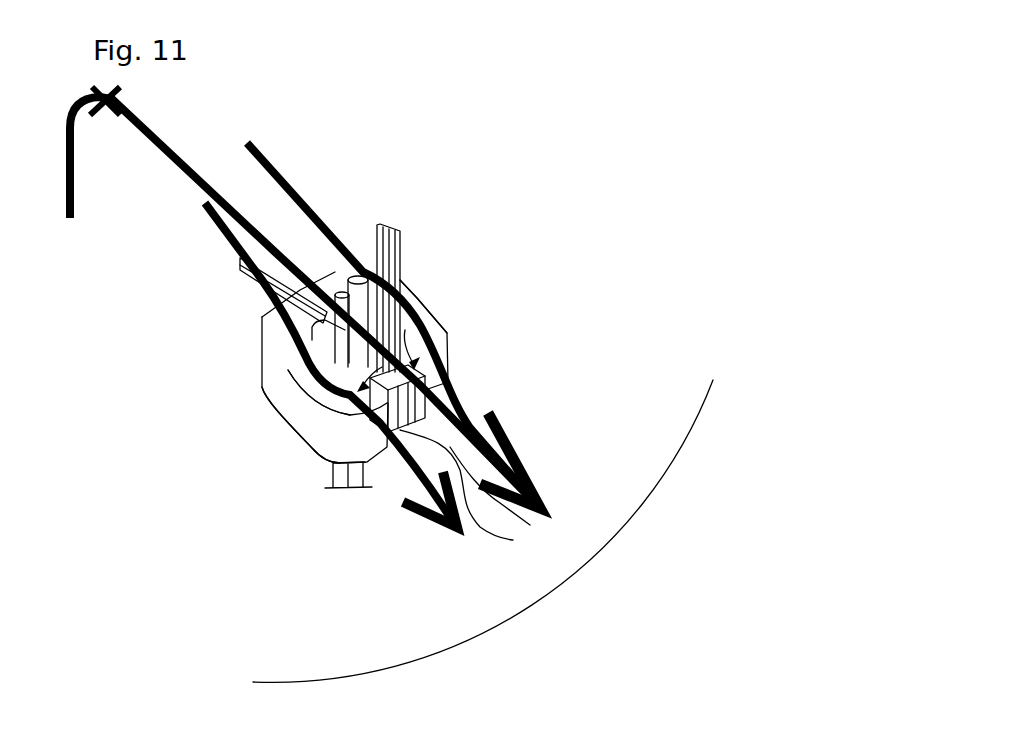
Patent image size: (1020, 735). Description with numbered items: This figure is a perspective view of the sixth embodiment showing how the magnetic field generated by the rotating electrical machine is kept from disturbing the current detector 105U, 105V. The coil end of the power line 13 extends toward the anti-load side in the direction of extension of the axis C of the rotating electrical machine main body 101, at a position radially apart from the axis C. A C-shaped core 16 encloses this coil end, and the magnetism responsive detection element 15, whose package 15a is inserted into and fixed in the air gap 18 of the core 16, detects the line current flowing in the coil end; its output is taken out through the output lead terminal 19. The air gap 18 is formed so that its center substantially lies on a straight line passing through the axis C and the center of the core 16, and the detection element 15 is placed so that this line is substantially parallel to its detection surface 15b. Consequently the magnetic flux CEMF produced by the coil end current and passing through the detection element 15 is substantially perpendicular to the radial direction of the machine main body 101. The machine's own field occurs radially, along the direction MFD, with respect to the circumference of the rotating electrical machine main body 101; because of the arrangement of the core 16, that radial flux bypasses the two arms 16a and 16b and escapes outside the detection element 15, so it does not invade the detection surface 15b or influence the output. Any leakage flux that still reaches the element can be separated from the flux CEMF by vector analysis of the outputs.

The axis C is at (100, 108).
The radial direction of the magnetic field MFD is at (228, 202).
The magnetic flux generated by the coil end current CEMF is at (427, 337).
The output lead terminal 19 is at (400, 262).
The core 16 is at (262, 368).
The arm of the core 16a is at (285, 400).
The arm of the core 16b is at (417, 298).
The magnetism responsive detection element 15 is at (490, 486).
The package 15a is at (538, 493).
The detection surface 15b is at (437, 378).
The power line 13 is at (340, 473).
The air gap 18 is at (472, 498).
The U-phase current detector 105U is at (300, 434).
The V-phase current detector 105V is at (319, 392).
The rotating electrical machine main body 101 is at (675, 457).